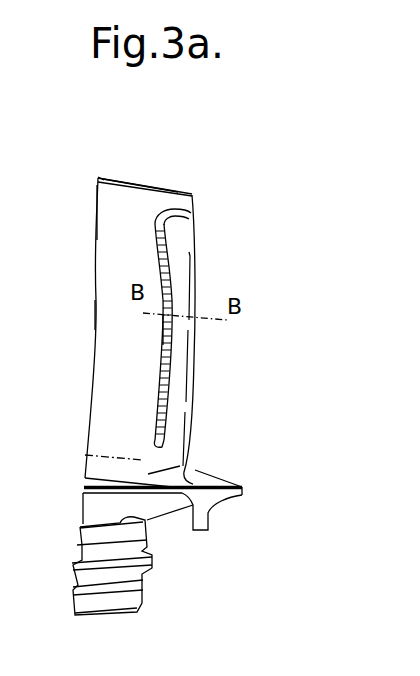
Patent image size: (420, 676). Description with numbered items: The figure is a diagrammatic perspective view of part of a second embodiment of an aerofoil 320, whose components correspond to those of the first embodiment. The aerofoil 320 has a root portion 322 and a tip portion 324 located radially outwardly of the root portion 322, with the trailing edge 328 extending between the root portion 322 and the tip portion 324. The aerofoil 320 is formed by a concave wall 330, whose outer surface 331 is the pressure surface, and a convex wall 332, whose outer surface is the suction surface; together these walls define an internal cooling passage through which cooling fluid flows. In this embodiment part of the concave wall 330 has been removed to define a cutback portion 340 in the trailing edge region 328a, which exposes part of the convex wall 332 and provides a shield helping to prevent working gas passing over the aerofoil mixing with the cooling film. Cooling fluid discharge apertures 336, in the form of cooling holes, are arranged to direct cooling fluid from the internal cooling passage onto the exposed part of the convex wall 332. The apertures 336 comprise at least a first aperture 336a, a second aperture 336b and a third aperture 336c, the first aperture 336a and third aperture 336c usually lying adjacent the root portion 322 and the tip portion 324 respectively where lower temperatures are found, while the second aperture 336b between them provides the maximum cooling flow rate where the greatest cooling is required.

The aerofoil 320 is at (194, 156).
The root portion 322 is at (97, 462).
The tip portion 324 is at (132, 178).
The trailing edge 328 is at (195, 347).
The trailing edge region 328a is at (158, 168).
The concave wall 330 is at (108, 199).
The outer surface 331 is at (110, 334).
The convex wall 332 is at (107, 178).
The cooling fluid discharge apertures 336 is at (162, 408).
The first aperture 336a is at (160, 444).
The second aperture 336b is at (170, 330).
The third aperture 336c is at (160, 224).
The cutback portion 340 is at (194, 240).